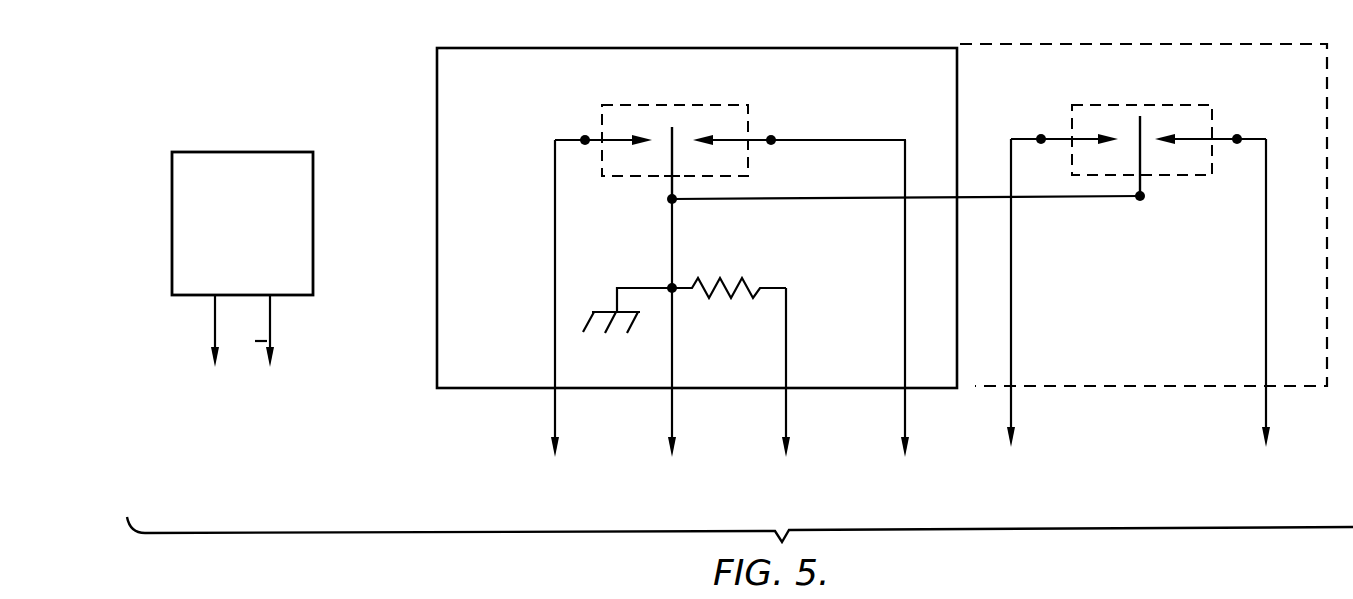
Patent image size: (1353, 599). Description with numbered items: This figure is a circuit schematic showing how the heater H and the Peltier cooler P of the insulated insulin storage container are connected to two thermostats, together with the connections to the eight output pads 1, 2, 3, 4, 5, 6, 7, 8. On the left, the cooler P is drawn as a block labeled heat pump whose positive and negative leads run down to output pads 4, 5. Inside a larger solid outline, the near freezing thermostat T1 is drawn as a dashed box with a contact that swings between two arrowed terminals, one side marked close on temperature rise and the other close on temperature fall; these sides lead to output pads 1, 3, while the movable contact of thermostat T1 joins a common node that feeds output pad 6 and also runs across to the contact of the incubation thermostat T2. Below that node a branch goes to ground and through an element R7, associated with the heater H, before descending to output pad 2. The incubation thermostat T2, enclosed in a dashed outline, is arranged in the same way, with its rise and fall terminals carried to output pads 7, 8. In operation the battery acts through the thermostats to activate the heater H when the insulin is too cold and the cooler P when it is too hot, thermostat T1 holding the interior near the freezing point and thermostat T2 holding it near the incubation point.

The Peltier cooler P is at (270, 142).
The output pad 4 is at (206, 349).
The output pad 5 is at (266, 349).
The near freezing thermostat T1 is at (712, 90).
The incubation thermostat T2 is at (1147, 86).
The resistor R7 is at (790, 244).
The heater H is at (741, 265).
The output pad 1 is at (544, 317).
The output pad 2 is at (785, 391).
The output pad 3 is at (919, 317).
The output pad 6 is at (671, 347).
The output pad 7 is at (999, 317).
The output pad 8 is at (1279, 317).